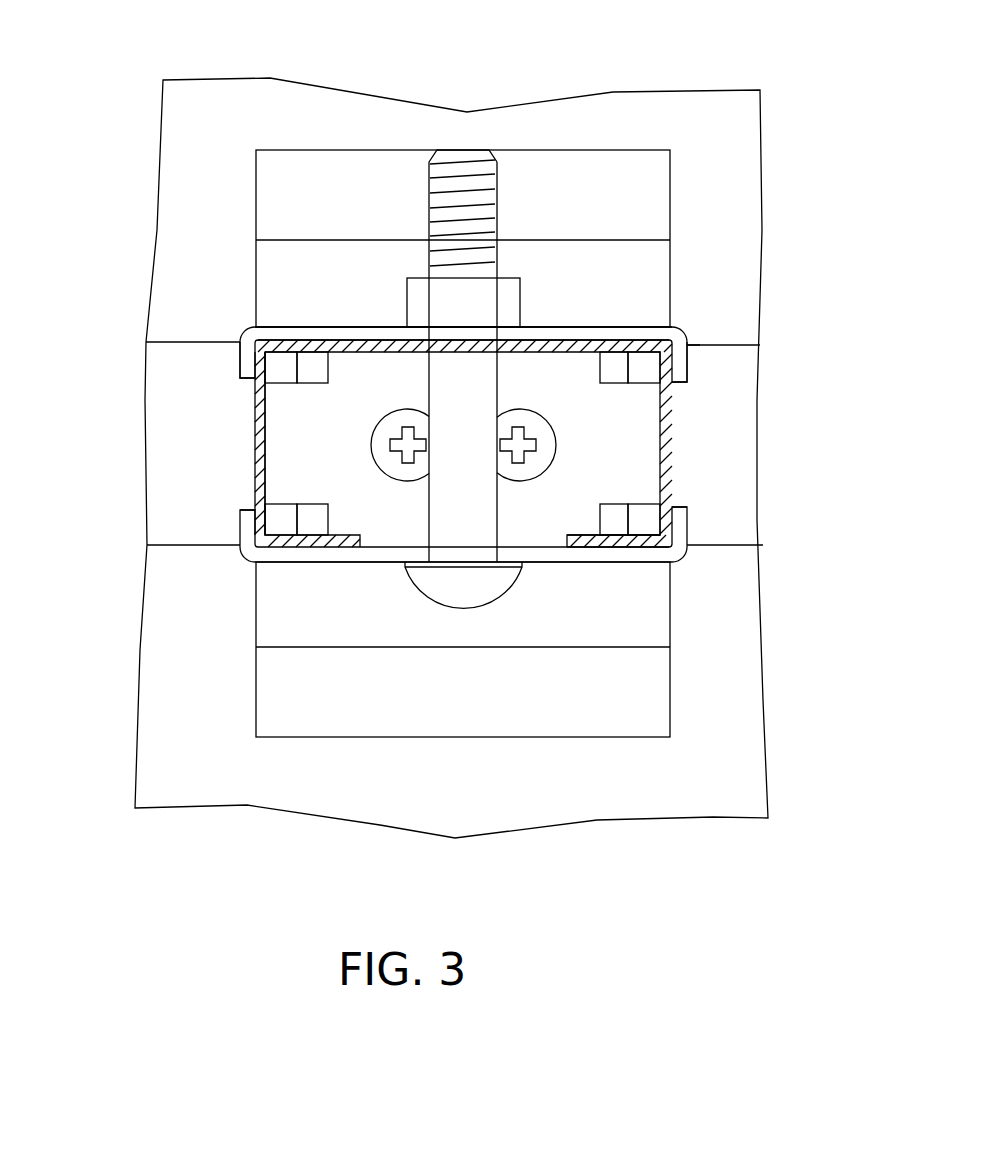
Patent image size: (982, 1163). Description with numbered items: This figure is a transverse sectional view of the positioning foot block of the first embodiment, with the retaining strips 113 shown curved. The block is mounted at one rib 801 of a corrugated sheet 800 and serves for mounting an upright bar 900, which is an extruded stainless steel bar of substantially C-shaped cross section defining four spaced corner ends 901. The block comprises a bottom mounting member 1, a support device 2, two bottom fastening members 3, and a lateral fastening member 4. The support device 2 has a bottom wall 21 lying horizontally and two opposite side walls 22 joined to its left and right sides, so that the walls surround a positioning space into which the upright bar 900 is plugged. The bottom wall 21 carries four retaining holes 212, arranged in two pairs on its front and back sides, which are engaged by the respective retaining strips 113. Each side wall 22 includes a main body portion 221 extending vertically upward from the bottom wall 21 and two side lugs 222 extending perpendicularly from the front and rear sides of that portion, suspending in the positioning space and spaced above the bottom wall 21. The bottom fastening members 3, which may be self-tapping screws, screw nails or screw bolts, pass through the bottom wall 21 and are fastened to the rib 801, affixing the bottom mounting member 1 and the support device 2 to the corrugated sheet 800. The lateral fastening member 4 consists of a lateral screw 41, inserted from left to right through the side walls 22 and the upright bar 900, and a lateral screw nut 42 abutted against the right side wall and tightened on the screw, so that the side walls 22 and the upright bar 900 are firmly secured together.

The corrugated sheet 800 is at (255, 110).
The rib 801 is at (735, 493).
The corner ends 901 is at (247, 340).
The bottom mounting member 1 is at (270, 180).
The support device 2 is at (437, 404).
The side walls 22 is at (240, 320).
The main body portion 221 is at (617, 337).
The side lugs 222 is at (247, 367).
The bottom wall 21 is at (297, 425).
The retaining holes 212 is at (648, 517).
The upright bar 900 is at (250, 477).
The retaining strips 113 is at (612, 520).
The bottom fastening members 3 is at (415, 420).
The lateral fastening member 4 is at (512, 458).
The lateral screw 41 is at (477, 588).
The lateral screw nut 42 is at (512, 288).